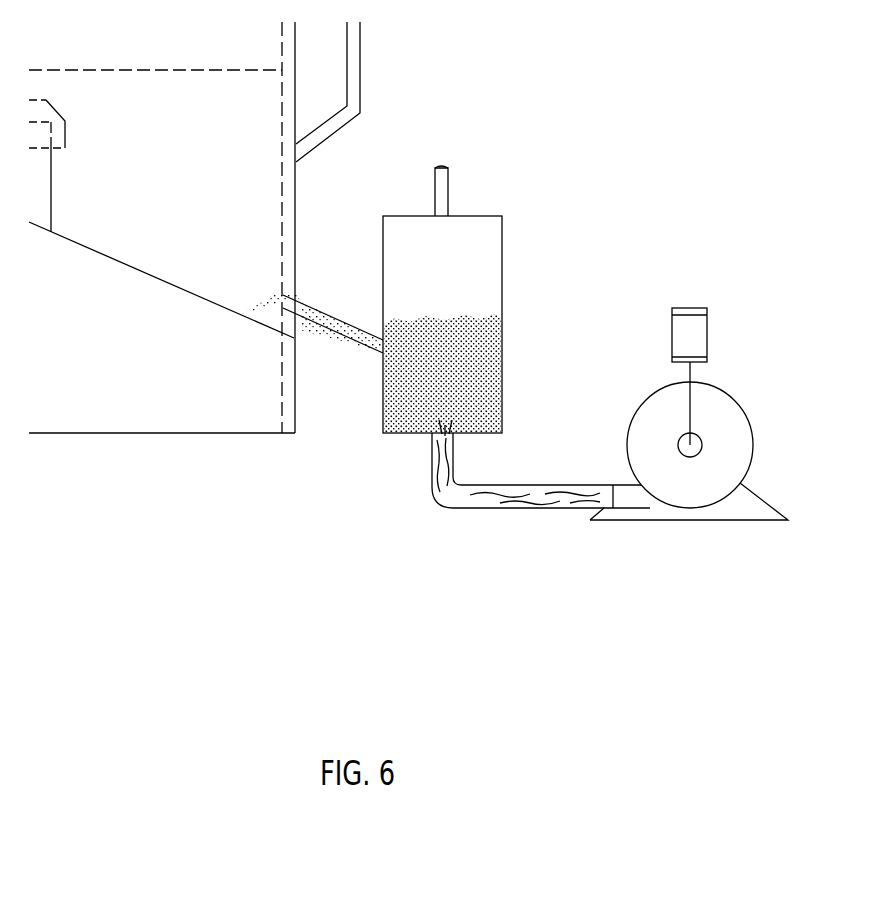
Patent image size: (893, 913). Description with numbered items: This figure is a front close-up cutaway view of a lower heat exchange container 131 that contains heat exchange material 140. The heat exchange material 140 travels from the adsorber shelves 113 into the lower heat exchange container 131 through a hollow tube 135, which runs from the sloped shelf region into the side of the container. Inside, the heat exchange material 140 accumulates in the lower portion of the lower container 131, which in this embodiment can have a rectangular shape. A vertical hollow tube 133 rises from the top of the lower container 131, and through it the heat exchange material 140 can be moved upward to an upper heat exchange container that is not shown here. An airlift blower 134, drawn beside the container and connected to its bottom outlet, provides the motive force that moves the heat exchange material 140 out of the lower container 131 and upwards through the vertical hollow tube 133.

The adsorber shelves 113 is at (112, 256).
The lower heat exchange container 131 is at (482, 244).
The vertical hollow tube 133 is at (449, 180).
The airlift blower 134 is at (730, 396).
The hollow tube 135 is at (356, 342).
The heat exchange material 140 is at (480, 353).